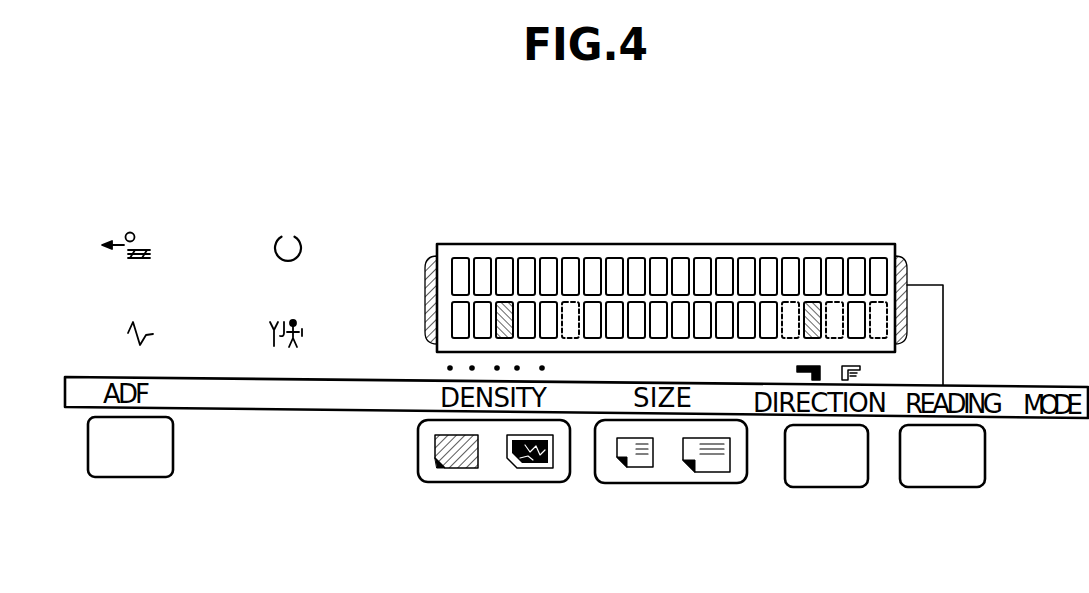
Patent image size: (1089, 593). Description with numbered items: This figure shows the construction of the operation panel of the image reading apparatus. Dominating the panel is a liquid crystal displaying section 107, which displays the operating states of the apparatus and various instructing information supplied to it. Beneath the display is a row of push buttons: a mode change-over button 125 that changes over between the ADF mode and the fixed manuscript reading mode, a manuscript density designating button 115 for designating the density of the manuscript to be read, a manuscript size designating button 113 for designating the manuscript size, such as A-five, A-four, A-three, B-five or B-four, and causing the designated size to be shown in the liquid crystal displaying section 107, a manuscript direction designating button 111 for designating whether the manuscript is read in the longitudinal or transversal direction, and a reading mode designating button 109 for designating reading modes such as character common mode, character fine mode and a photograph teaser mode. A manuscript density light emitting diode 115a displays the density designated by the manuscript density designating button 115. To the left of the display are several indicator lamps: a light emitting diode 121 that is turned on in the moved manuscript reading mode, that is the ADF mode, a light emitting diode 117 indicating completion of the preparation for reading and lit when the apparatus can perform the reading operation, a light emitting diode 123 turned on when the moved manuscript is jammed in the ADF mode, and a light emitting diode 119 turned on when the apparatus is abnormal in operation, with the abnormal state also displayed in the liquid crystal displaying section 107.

The liquid crystal displaying section 107 is at (857, 244).
The reading mode designating button 109 is at (965, 488).
The manuscript direction designating button 111 is at (840, 488).
The manuscript size designating button 113 is at (678, 484).
The manuscript density designating button 115 is at (515, 483).
The manuscript density light emitting diode 115a is at (545, 368).
The light emitting diode 117 is at (301, 247).
The light emitting diode 119 is at (306, 332).
The light emitting diode 121 is at (148, 231).
The light emitting diode 123 is at (153, 333).
The mode change-over button 125 is at (142, 478).